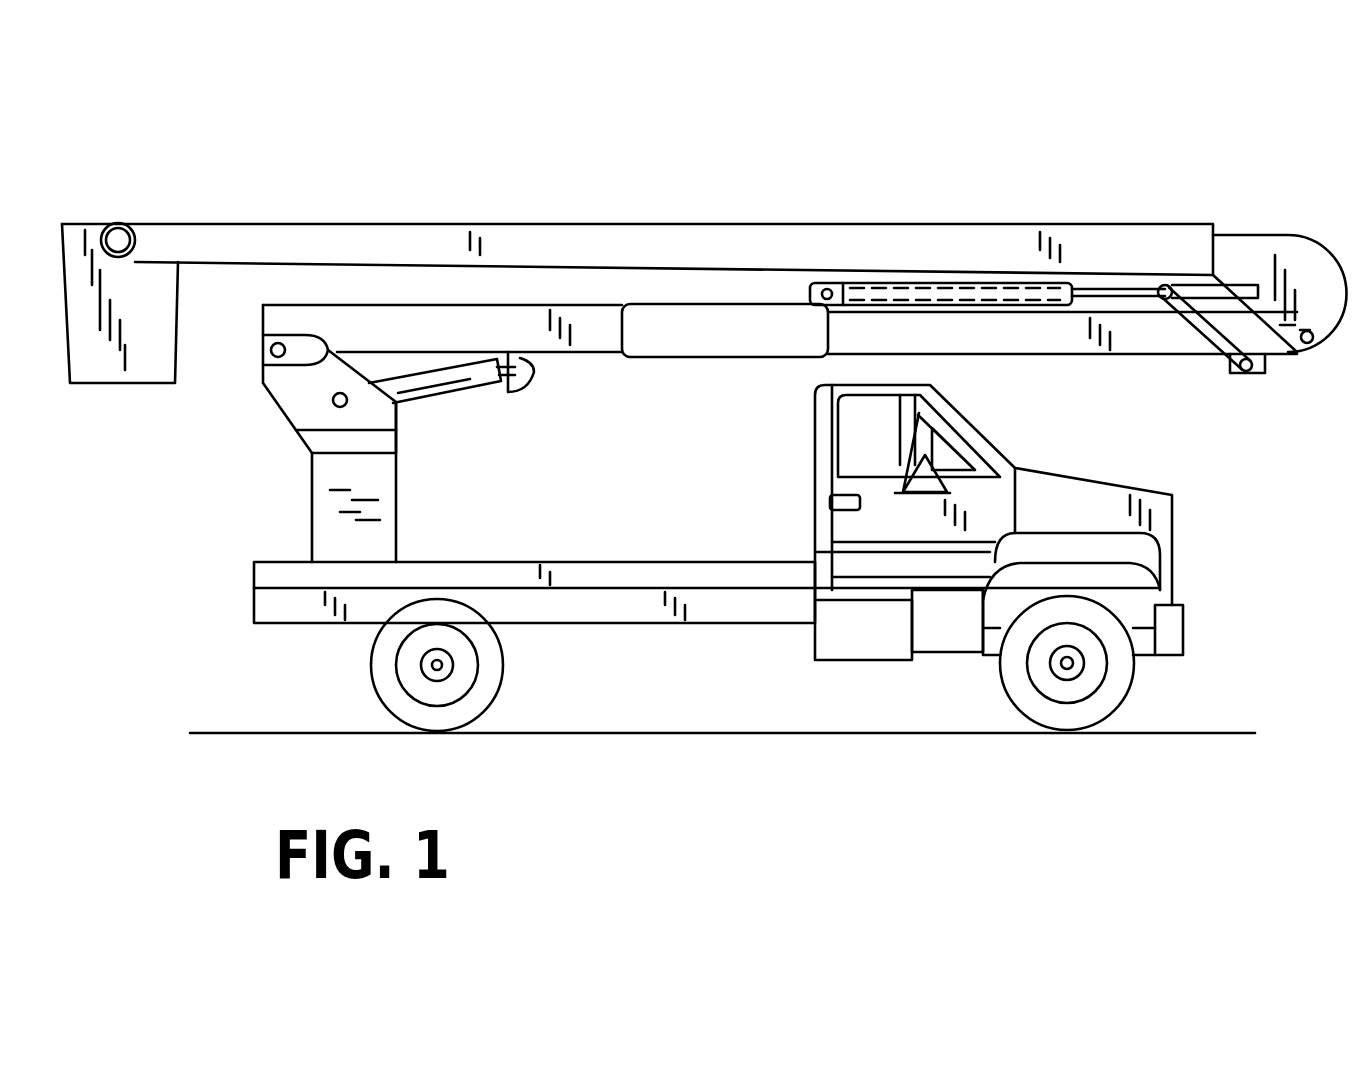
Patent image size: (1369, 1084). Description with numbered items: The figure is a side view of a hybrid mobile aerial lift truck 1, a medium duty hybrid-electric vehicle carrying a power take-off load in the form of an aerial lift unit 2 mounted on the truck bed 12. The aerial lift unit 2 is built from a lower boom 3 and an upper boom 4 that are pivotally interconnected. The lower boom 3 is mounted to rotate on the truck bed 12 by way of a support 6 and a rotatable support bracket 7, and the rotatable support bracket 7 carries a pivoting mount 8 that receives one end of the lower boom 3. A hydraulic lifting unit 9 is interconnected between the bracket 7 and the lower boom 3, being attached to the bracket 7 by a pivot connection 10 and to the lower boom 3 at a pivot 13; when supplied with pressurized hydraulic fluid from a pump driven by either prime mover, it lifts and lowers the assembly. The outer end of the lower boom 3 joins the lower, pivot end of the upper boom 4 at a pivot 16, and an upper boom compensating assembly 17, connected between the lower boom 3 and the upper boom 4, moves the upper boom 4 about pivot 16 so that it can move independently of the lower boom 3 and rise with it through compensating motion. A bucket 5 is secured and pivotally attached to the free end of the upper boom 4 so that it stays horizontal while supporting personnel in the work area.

The hybrid mobile aerial lift truck 1 is at (1115, 456).
The aerial lift unit 2 is at (653, 222).
The lower boom 3 is at (708, 340).
The upper boom 4 is at (906, 238).
The bucket 5 is at (141, 329).
The support 6 is at (286, 497).
The rotatable support bracket 7 is at (263, 383).
The pivoting mount 8 is at (262, 350).
The hydraulic lifting unit 9 is at (452, 402).
The pivot connection 10 is at (333, 402).
The truck bed 12 is at (637, 560).
The pivot 13 is at (535, 372).
The pivot 16 is at (1310, 345).
The upper boom compensating assembly 17 is at (1110, 280).